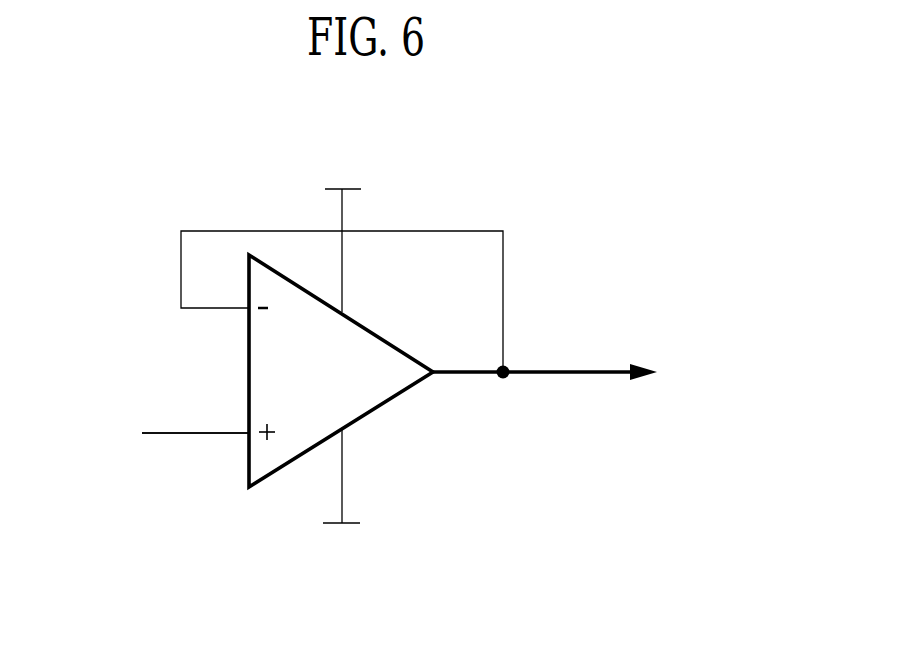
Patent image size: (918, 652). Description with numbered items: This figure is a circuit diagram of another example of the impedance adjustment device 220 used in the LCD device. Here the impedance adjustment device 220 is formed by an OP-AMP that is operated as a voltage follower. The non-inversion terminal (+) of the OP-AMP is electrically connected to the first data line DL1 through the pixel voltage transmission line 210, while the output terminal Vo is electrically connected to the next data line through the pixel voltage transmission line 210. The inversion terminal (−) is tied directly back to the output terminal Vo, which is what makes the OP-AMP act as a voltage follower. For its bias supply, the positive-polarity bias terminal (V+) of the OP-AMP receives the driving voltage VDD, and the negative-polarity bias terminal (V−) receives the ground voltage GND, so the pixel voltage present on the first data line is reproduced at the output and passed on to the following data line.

The impedance adjustment device 220 is at (80, 181).
The pixel voltage transmission line 210 is at (196, 435).
The driving voltage VDD is at (339, 235).
The ground voltage GND is at (341, 491).
The output terminal Vo is at (517, 360).
The first data line DL1 is at (173, 431).